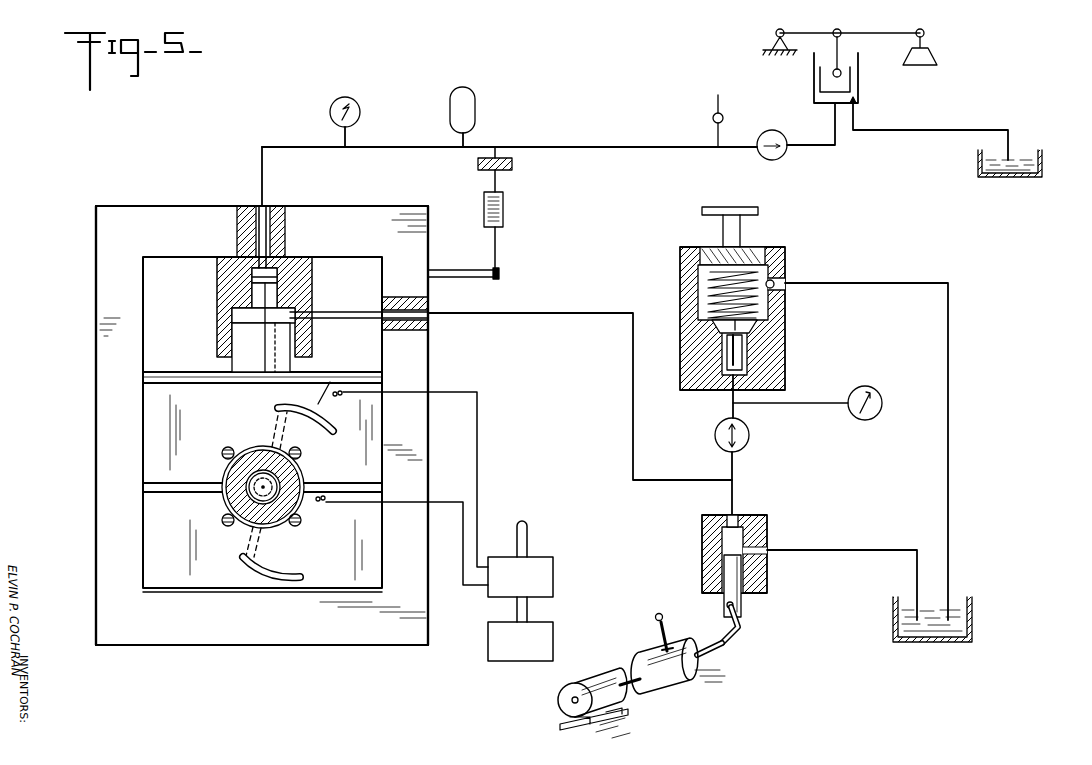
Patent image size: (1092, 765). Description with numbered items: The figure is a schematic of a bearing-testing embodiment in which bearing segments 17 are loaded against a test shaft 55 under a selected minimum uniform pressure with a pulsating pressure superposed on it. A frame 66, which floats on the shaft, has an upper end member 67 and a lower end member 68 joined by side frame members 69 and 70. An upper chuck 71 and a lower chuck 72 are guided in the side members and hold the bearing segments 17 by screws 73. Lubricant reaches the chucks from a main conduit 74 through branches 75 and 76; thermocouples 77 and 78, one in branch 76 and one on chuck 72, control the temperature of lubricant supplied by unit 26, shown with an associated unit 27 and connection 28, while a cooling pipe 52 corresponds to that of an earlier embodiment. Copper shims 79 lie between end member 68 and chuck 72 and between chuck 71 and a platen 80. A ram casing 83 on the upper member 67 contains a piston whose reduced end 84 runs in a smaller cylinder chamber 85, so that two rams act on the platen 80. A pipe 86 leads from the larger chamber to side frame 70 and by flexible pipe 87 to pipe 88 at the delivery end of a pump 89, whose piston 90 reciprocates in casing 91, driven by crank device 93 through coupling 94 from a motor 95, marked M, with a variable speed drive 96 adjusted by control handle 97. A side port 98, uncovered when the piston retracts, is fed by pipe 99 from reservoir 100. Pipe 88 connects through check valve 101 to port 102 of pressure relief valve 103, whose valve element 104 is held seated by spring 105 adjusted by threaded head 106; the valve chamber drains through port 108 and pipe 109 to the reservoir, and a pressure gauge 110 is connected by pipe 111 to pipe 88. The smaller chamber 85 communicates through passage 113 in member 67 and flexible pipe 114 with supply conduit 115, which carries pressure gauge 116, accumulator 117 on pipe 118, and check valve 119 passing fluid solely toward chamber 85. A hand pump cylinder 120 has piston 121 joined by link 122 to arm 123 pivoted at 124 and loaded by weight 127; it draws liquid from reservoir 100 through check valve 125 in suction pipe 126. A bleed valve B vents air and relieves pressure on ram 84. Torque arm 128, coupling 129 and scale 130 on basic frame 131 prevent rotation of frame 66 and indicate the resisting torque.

The bearing segments 17 is at (256, 447).
The lubricant supply unit 26 is at (520, 577).
The control box 27 is at (520, 641).
The connecting rod 28 is at (530, 613).
The pipe 52 is at (256, 497).
The hub 55 is at (237, 497).
The frame 66 is at (103, 235).
The upper end member 67 is at (170, 204).
The lower end member 68 is at (297, 625).
The side frame member 69 is at (110, 281).
The side frame member 70 is at (418, 246).
The upper chuck member 71 is at (170, 428).
The lower chuck member 72 is at (150, 567).
The screws 73 is at (222, 453).
The main conduit 74 is at (530, 538).
The branch 75 is at (273, 578).
The branch 76 is at (335, 427).
The thermocouple 77 is at (318, 403).
The thermocouple 78 is at (307, 495).
The copper shims 79 is at (150, 396).
The platen 80 is at (150, 368).
The ram casing 83 is at (305, 293).
The reduced piston end 84 is at (305, 276).
The reduced diameter cylinder chamber 85 is at (240, 276).
The pipe 86 is at (360, 324).
The flexible pipe 87 is at (633, 340).
The pipe 88 is at (733, 400).
The pump 89 is at (765, 536).
The piston 90 is at (745, 606).
The pump casing 91 is at (768, 591).
The crank device 93 is at (744, 641).
The coupling 94 is at (717, 650).
The motor 95 is at (589, 676).
The variable speed drive 96 is at (680, 674).
The control handle 97 is at (666, 625).
The port opening 98 is at (768, 567).
The pipe 99 is at (858, 548).
The reservoir 100 is at (1040, 166).
The check valve 101 is at (715, 441).
The port 102 is at (752, 383).
The pressure relief valve 103 is at (680, 264).
The valve element 104 is at (748, 326).
The spring 105 is at (772, 272).
The head 106 is at (742, 247).
The port 108 is at (786, 291).
The pipe 109 is at (948, 300).
The pressure gauge 110 is at (882, 401).
The pipe 111 is at (829, 401).
The passage 113 is at (272, 236).
The flexible pipe 114 is at (262, 166).
The supply conduit 115 is at (668, 144).
The pressure gauge 116 is at (346, 97).
The accumulator 117 is at (470, 92).
The pipe 118 is at (455, 145).
The check valve 119 is at (782, 154).
The pump cylinder 120 is at (858, 72).
The piston 121 is at (818, 78).
The link 122 is at (840, 48).
The arm 123 is at (814, 32).
The pivot 124 is at (776, 35).
The check valve 125 is at (860, 101).
The suction pipe 126 is at (958, 128).
The weight 127 is at (935, 57).
The torque arm 128 is at (455, 270).
The coupling 129 is at (499, 268).
The scale 130 is at (505, 212).
The basic frame 131 is at (514, 164).
The bleed valve B is at (729, 110).
The motor M is at (560, 697).